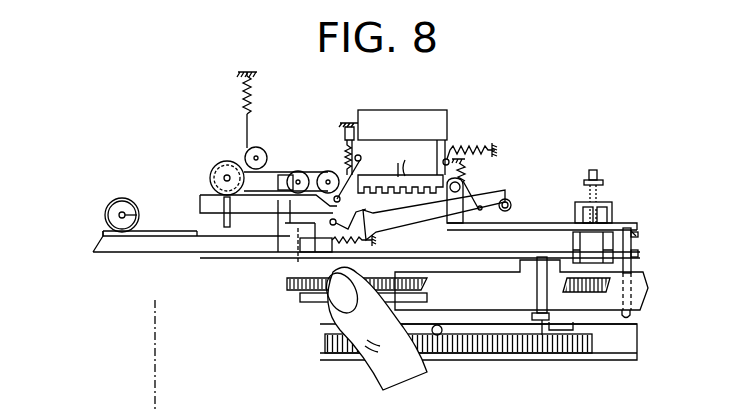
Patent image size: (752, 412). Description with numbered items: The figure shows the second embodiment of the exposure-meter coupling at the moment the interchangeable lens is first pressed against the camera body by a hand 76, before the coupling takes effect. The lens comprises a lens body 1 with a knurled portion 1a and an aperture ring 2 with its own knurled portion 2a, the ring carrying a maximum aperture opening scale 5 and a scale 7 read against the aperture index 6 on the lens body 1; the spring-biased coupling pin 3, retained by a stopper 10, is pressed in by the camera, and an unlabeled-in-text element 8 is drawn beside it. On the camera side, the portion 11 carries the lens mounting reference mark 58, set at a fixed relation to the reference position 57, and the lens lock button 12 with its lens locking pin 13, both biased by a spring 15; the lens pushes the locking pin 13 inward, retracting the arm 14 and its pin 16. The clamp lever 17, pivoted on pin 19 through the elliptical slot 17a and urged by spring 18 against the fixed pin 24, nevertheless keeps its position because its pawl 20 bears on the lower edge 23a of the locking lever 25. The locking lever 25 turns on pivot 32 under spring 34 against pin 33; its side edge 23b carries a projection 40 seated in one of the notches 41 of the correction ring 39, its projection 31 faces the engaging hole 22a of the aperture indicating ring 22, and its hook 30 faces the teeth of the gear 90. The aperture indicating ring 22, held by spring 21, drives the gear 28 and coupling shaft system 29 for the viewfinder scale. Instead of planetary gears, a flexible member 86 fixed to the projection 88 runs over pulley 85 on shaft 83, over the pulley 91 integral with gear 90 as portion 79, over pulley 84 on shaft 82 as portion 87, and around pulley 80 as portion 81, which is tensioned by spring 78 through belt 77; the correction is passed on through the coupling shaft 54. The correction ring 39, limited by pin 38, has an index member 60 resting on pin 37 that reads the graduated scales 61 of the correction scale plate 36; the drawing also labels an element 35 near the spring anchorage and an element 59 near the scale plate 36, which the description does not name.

The lens body 1 is at (615, 352).
The knurled portion 1a is at (573, 356).
The aperture ring 2 is at (323, 332).
The knurled portion 2a is at (305, 300).
The coupling pin 3 is at (537, 274).
The maximum aperture opening scale 5 is at (420, 308).
The aperture index 6 is at (437, 336).
The scale 7 is at (506, 309).
The nut 8 is at (544, 301).
The stopper 10 is at (545, 330).
The camera body portion 11 is at (425, 253).
The lens lock button 12 is at (587, 253).
The lens locking pin 13 is at (632, 240).
The arm 14 is at (557, 222).
The spring 15 is at (610, 213).
The pin 16 is at (465, 187).
The clamp lever 17 is at (509, 199).
The elliptical slot 17a is at (508, 210).
The spring 18 is at (465, 172).
The pin 19 is at (511, 205).
The pawl 20 is at (383, 222).
The spring 21 is at (345, 244).
The aperture indicating ring 22 is at (187, 253).
The engaging hole 22a is at (296, 290).
The lower edge 23a is at (398, 252).
The side edge 23b is at (451, 242).
The fixed pin 24 is at (470, 196).
The locking lever 25 is at (216, 250).
The gear 28 is at (118, 198).
The coupling shaft system 29 is at (105, 214).
The hook 30 is at (228, 222).
The projection 31 is at (297, 250).
The pivot 32 is at (338, 224).
The pin 33 is at (334, 200).
The spring 34 is at (350, 125).
The anchor 35 is at (492, 150).
The correction scale plate 36 is at (407, 110).
The pin 37 is at (480, 146).
The pin 38 is at (362, 158).
The correction ring 39 is at (413, 158).
The projection 40 is at (370, 197).
The notches 41 is at (363, 177).
The coupling shaft 54 is at (243, 162).
The reference position 57 is at (158, 353).
The lens mounting reference mark 58 is at (521, 285).
The indicator 59 is at (447, 128).
The index member 60 is at (419, 167).
The graduated scales 61 is at (373, 124).
The hand 76 is at (377, 358).
The belt 77 is at (243, 133).
The spring 78 is at (243, 99).
The flexible member portion 79 is at (318, 178).
The pulley 80 is at (246, 148).
The flexible member portion 81 is at (288, 174).
The shaft 82 is at (294, 174).
The shaft 83 is at (326, 172).
The pulley 84 is at (286, 184).
The pulley 85 is at (332, 171).
The flexible member 86 is at (272, 232).
The flexible member portion 87 is at (227, 200).
The projection 88 is at (255, 228).
The gear 90 is at (210, 183).
The pulley 91 is at (212, 172).